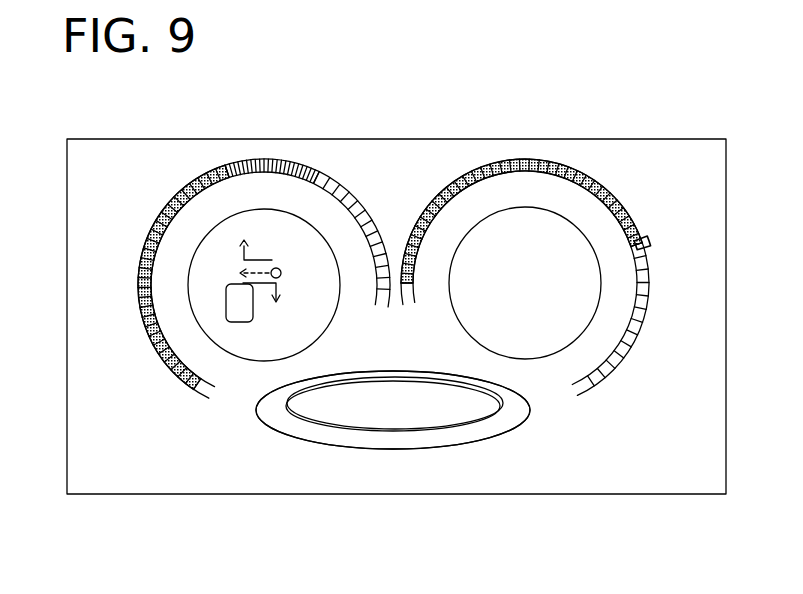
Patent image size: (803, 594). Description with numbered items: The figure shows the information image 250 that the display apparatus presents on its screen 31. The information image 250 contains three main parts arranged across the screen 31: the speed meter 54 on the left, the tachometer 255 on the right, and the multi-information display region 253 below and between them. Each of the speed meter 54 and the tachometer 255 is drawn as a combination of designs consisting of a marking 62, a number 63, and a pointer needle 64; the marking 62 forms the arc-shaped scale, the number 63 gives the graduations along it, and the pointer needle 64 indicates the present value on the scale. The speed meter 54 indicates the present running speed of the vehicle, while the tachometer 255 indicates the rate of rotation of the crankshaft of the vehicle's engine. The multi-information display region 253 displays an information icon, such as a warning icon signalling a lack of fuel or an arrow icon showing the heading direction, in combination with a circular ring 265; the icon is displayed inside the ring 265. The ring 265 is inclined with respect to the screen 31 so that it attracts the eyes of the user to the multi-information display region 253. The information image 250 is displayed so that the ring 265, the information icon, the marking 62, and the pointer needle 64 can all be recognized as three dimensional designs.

The screen 31 is at (648, 156).
The speed meter 54 is at (437, 178).
The marking 62 is at (222, 172).
The number 63 is at (322, 180).
The pointer needle 64 is at (650, 242).
The information image 250 is at (422, 319).
The multi-information display region 253 is at (486, 448).
The tachometer 255 is at (370, 182).
The circular ring 265 is at (361, 437).